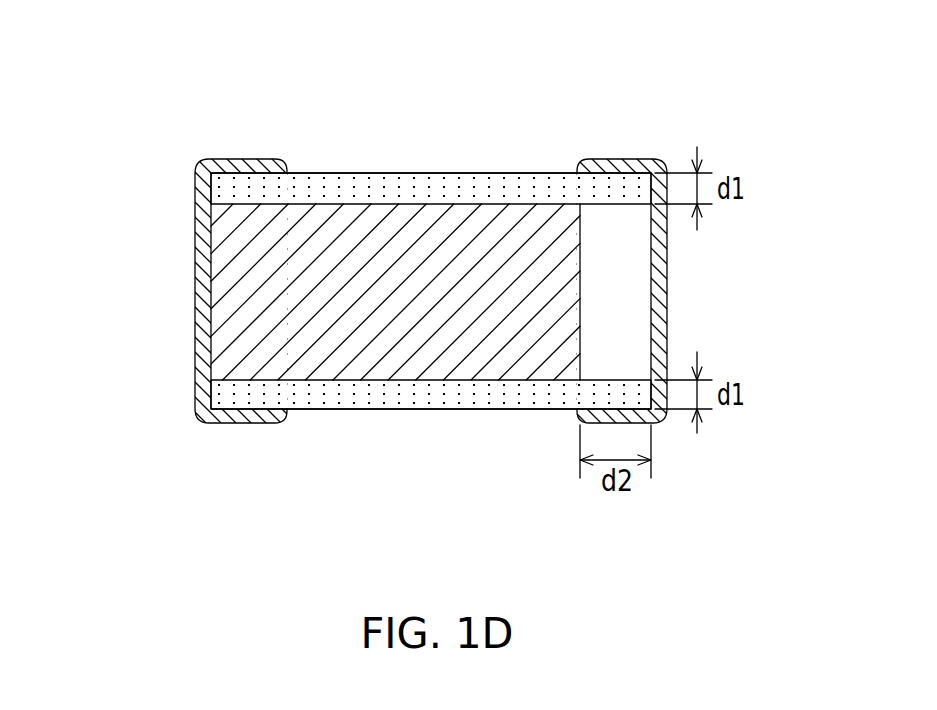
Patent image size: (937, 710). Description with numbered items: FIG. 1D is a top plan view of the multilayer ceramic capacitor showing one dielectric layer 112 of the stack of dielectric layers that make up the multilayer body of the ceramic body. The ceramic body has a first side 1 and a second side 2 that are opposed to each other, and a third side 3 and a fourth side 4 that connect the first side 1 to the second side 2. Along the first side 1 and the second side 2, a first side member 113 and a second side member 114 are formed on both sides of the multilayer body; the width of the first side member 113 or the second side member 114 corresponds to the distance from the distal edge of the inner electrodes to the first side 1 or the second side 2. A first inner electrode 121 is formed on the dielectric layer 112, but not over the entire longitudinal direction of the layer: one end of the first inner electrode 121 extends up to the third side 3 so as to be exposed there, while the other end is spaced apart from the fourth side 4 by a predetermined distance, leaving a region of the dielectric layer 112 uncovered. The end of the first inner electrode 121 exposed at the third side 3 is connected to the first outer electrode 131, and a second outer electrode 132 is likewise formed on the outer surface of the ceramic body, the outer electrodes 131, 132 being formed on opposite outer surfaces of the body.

The first side 1 is at (434, 284).
The second side 2 is at (457, 425).
The third side 3 is at (185, 313).
The fourth side 4 is at (675, 280).
The dielectric layer 112 is at (637, 333).
The first side member 113 is at (222, 188).
The second side member 114 is at (222, 393).
The first inner electrode 121 is at (398, 360).
The first outer electrode 131 is at (243, 162).
The second outer electrode 132 is at (624, 162).